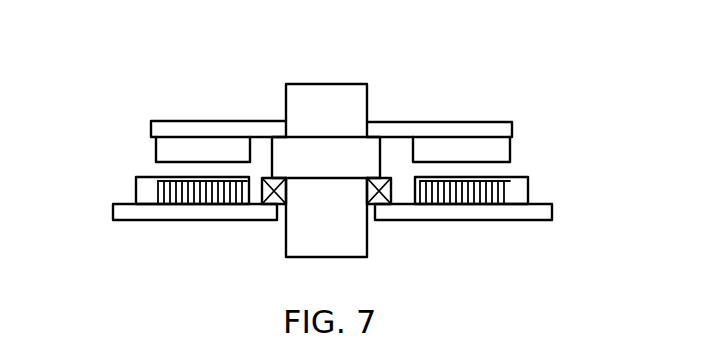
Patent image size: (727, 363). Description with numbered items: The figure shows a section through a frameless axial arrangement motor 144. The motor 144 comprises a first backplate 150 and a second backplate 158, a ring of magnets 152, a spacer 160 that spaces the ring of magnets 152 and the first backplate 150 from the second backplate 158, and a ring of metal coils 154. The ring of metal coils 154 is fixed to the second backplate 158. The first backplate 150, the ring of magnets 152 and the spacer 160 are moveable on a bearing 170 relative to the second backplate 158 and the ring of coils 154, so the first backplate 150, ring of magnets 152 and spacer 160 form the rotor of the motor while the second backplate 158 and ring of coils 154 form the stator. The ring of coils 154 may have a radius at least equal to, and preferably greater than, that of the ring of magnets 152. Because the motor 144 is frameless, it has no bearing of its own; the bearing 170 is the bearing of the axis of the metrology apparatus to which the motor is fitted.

The frameless axial arrangement motor 144 is at (117, 83).
The first backplate 150 is at (512, 126).
The ring of magnets 152 is at (512, 150).
The ring of metal coils 154 is at (528, 191).
The second backplate 158 is at (553, 212).
The spacer 160 is at (290, 157).
The bearing 170 is at (378, 200).